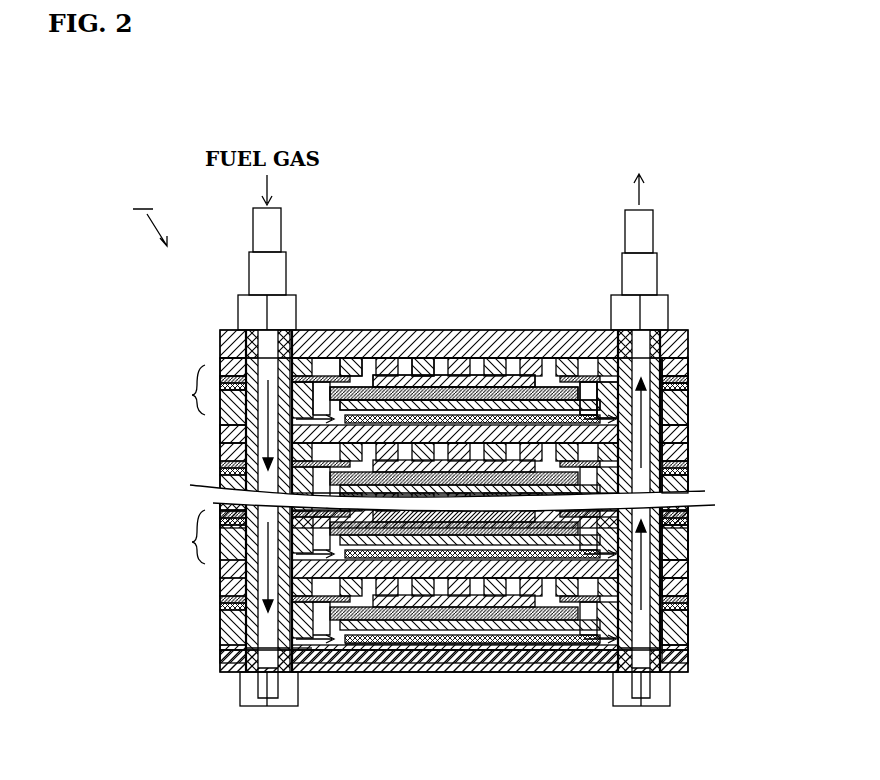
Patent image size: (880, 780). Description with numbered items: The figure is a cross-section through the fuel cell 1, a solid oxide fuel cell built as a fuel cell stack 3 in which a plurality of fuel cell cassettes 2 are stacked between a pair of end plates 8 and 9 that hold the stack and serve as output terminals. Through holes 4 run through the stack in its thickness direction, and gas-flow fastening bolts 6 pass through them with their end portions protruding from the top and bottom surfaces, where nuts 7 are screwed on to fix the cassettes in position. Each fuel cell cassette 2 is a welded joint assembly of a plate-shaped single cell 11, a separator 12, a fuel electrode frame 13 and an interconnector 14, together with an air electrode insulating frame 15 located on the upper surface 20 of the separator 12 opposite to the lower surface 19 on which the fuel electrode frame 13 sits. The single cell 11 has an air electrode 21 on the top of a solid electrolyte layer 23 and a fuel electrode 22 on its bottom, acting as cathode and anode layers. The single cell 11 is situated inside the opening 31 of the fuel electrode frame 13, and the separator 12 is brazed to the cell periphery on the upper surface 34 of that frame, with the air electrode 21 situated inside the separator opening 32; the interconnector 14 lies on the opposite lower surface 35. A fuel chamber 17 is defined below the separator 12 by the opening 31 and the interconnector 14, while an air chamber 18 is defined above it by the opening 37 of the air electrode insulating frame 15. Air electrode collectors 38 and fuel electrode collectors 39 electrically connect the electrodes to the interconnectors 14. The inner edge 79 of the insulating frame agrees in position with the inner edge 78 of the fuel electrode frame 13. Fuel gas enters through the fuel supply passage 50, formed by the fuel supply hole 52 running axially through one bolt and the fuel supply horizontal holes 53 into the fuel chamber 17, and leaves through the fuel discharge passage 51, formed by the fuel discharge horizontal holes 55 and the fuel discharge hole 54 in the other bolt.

The fuel cell 1 is at (150, 216).
The fuel cell cassette 2 is at (187, 461).
The fuel cell stack 3 is at (346, 330).
The through hole 4 is at (451, 496).
The gas-flow fastening bolt 6 is at (304, 665).
The nut 7 is at (242, 304).
The end plate 8 is at (687, 330).
The end plate 9 is at (690, 660).
The single cell 11 is at (358, 386).
The separator 12 is at (545, 364).
The fuel electrode frame 13 is at (686, 408).
The interconnector 14 is at (686, 430).
The air electrode insulating frame 15 is at (686, 362).
The fuel chamber 17 is at (344, 657).
The air chamber 18 is at (532, 648).
The surface 19 is at (686, 387).
The surface 20 is at (686, 378).
The air electrode 21 is at (455, 371).
The fuel electrode 22 is at (383, 384).
The solid electrolyte layer 23 is at (490, 386).
The opening 31 is at (333, 393).
The opening 32 is at (542, 382).
The surface 34 is at (234, 378).
The surface 35 is at (236, 434).
The opening 37 is at (315, 378).
The air electrode collector 38 is at (419, 360).
The fuel electrode collector 39 is at (480, 658).
The fuel supply passage 50 is at (252, 351).
The fuel discharge passage 51 is at (624, 330).
The fuel supply hole 52 is at (274, 684).
The fuel supply horizontal hole 53 is at (288, 647).
The fuel discharge hole 54 is at (638, 676).
The fuel discharge horizontal hole 55 is at (678, 648).
The inner edge 78 is at (590, 384).
The inner edge 79 is at (596, 380).